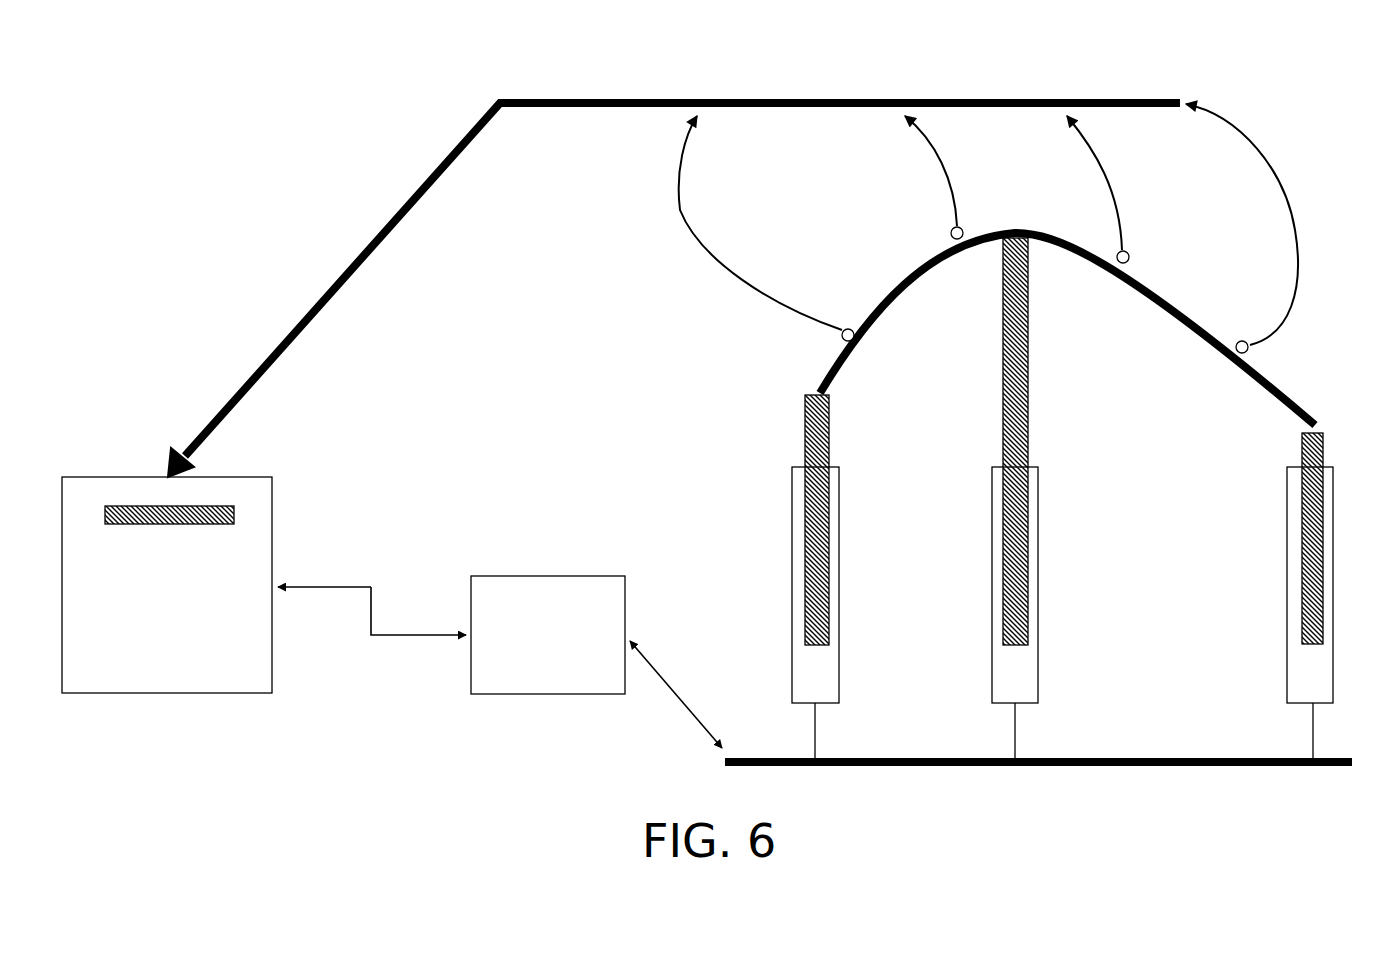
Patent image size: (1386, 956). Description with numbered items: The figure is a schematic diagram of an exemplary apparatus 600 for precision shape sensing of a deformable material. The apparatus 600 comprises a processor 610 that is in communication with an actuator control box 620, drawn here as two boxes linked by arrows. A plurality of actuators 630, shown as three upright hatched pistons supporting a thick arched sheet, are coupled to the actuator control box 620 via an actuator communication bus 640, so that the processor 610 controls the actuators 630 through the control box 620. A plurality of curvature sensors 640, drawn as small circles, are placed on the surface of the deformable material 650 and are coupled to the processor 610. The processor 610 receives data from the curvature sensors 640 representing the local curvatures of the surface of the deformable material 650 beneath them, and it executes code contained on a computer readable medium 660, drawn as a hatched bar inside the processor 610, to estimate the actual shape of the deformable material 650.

The apparatus 600 is at (283, 241).
The processor 610 is at (137, 478).
The actuator control box 620 is at (535, 576).
The actuators 630 is at (990, 548).
The curvature sensors 640 is at (847, 325).
The deformable material 650 is at (820, 372).
The computer readable medium 660 is at (233, 507).